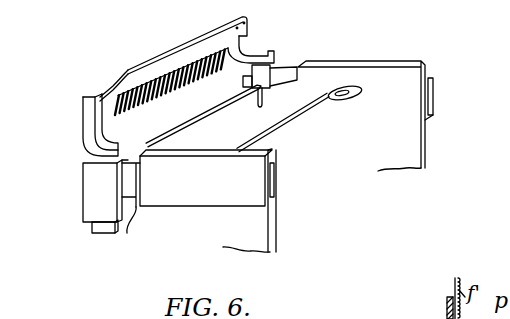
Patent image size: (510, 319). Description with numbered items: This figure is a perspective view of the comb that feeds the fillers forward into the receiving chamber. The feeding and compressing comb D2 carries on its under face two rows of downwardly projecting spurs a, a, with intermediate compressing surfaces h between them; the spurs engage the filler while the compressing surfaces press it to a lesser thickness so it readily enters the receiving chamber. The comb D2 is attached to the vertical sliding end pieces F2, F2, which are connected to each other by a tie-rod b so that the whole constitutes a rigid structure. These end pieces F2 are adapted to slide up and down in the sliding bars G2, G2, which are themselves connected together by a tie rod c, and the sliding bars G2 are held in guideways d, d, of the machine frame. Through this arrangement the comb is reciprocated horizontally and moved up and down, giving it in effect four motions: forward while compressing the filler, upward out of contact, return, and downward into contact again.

The feeding and compressing comb D2 is at (167, 38).
The intermediate compressing surfaces h is at (118, 102).
The vertical sliding end pieces F2 is at (257, 60).
The guideways d is at (432, 72).
The sliding bars G2 is at (441, 95).
The downwardly projecting spurs a is at (128, 103).
The tie-rod b is at (190, 108).
The tie rod c is at (291, 113).